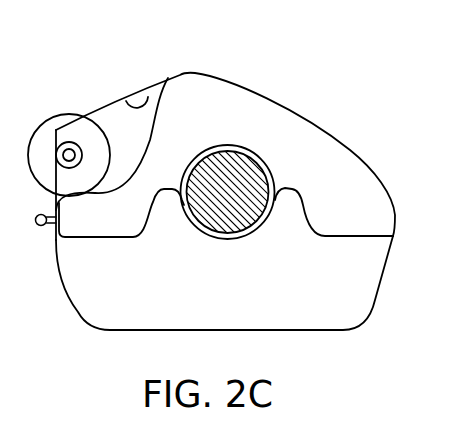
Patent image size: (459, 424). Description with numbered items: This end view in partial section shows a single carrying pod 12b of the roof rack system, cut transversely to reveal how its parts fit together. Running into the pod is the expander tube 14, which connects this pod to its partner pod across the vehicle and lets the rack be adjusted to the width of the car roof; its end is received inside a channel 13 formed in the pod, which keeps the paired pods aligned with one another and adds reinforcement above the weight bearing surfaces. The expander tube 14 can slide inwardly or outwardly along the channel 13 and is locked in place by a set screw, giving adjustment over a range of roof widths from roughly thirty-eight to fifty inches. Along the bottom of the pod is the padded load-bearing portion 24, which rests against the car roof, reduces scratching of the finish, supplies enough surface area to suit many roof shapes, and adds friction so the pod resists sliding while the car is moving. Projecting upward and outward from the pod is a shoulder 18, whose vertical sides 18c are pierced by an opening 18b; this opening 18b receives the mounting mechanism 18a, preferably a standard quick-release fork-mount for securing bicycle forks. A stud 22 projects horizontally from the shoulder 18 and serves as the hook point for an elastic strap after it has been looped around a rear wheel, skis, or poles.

The carrying pod 12b is at (221, 81).
The channel 13 is at (222, 239).
The expander tube 14 is at (253, 167).
The shoulder 18 is at (100, 107).
The mounting mechanism 18a is at (56, 130).
The opening 18b is at (58, 132).
The vertical sides 18c is at (120, 125).
The stud 22 is at (42, 226).
The padded load-bearing portion 24 is at (302, 331).